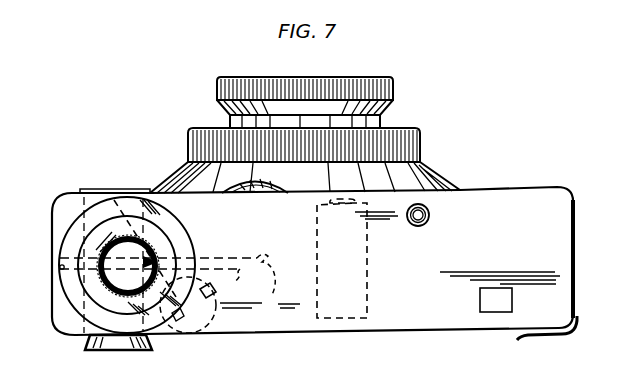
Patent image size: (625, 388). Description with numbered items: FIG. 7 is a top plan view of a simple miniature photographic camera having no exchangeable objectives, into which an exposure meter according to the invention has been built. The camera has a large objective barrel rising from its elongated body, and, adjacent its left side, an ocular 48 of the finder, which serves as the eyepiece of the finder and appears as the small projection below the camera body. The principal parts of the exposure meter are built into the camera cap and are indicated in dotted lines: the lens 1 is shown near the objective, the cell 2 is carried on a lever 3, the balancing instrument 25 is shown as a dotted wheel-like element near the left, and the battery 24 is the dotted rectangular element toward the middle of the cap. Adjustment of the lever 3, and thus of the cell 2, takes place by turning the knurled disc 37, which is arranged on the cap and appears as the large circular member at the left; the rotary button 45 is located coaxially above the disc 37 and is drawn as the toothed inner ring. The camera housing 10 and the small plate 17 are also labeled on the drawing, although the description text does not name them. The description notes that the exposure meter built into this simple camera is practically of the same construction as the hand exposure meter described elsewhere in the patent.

The lens 1 is at (268, 188).
The cell 2 is at (260, 306).
The lever 3 is at (254, 275).
The camera housing 10 is at (100, 189).
The identification plate 17 is at (496, 300).
The battery 24 is at (367, 288).
The balancing instrument 25 is at (203, 333).
The knurled disc 37 is at (98, 292).
The rotary button 45 is at (98, 243).
The ocular 48 is at (92, 350).